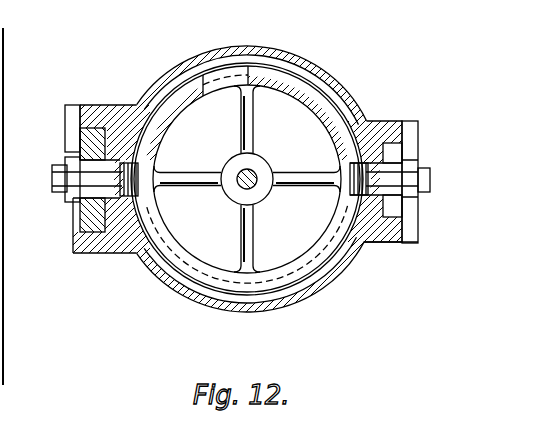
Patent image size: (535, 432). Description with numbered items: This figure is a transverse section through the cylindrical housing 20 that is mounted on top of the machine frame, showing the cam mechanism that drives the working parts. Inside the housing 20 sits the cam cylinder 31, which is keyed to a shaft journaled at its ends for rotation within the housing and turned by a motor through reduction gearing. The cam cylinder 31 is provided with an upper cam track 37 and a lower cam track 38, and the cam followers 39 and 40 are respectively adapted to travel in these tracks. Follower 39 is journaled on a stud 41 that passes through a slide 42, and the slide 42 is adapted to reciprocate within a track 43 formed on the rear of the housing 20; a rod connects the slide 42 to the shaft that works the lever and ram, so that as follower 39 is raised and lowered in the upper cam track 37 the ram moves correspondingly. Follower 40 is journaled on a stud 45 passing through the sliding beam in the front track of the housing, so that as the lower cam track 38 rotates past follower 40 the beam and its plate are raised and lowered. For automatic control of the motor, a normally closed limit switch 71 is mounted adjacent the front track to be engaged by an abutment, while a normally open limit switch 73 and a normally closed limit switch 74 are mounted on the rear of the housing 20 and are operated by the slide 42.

The cylindrical housing 20 is at (222, 312).
The cam cylinder 31 is at (280, 292).
The upper cam track 37 is at (327, 108).
The lower cam track 38 is at (115, 240).
The cam follower 39 is at (353, 183).
The cam follower 40 is at (133, 175).
The stud 41 is at (432, 177).
The slide 42 is at (390, 143).
The track 43 is at (402, 207).
The stud 45 is at (52, 177).
The normally closed limit switch 71 is at (64, 122).
The normally open limit switch 73 is at (420, 140).
The normally closed limit switch 74 is at (418, 241).